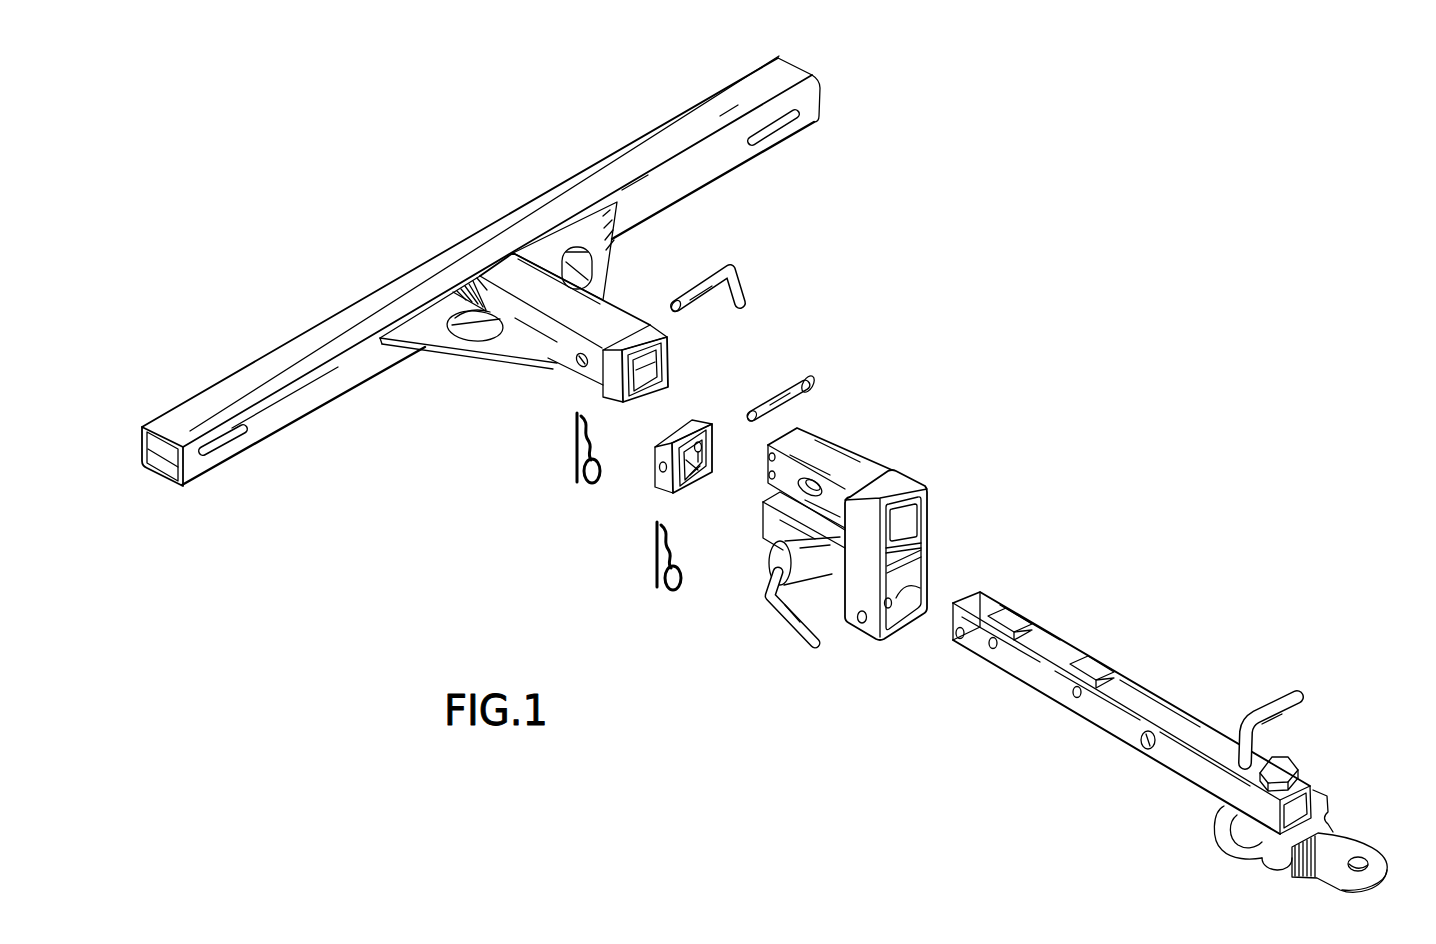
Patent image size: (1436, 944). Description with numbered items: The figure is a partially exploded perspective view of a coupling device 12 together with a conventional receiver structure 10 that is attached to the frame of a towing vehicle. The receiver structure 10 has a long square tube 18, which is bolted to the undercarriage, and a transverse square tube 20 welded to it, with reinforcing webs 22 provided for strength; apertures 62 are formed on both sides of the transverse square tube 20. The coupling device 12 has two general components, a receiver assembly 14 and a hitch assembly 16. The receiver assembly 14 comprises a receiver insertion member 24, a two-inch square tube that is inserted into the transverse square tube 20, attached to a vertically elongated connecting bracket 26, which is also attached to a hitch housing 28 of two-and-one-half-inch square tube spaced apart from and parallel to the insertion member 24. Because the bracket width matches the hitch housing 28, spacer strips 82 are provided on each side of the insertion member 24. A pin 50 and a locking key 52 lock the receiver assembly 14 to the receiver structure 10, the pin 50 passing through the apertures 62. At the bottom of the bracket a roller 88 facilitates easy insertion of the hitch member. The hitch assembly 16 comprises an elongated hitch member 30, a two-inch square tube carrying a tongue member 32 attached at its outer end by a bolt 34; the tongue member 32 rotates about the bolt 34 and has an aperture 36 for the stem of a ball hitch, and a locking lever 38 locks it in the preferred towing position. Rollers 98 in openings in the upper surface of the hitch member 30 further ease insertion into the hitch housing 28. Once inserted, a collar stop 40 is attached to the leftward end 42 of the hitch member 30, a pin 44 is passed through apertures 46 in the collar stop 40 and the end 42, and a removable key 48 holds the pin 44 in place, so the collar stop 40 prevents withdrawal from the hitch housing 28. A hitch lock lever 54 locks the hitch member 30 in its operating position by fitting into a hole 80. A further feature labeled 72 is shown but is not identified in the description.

The receiver structure 10 is at (915, 182).
The coupling device 12 is at (1086, 458).
The receiver assembly 14 is at (968, 455).
The hitch assembly 16 is at (1208, 629).
The long square tube 18 is at (462, 240).
The transverse square tube 20 is at (574, 349).
The reinforcing webs 22 is at (609, 258).
The receiver insertion member 24 is at (820, 452).
The connecting bracket 26 is at (928, 557).
The hitch housing 28 is at (763, 520).
The elongated hitch member 30 is at (1124, 713).
The tongue member 32 is at (1318, 850).
The bolt 34 is at (1290, 758).
The aperture 36 is at (1363, 857).
The locking lever 38 is at (1268, 702).
The collar stop 40 is at (660, 440).
The leftward end 42 is at (968, 650).
The pin 44 is at (803, 383).
The apertures 46 is at (660, 466).
The removable key 48 is at (667, 590).
The pin 50 is at (733, 270).
The locking key 52 is at (588, 485).
The hitch lock lever 54 is at (782, 605).
The apertures 62 is at (578, 366).
The pin shaft 72 is at (817, 590).
The hole 80 is at (1153, 749).
The spacer strips 82 is at (915, 560).
The roller 88 is at (895, 605).
The rollers 98 is at (1015, 622).